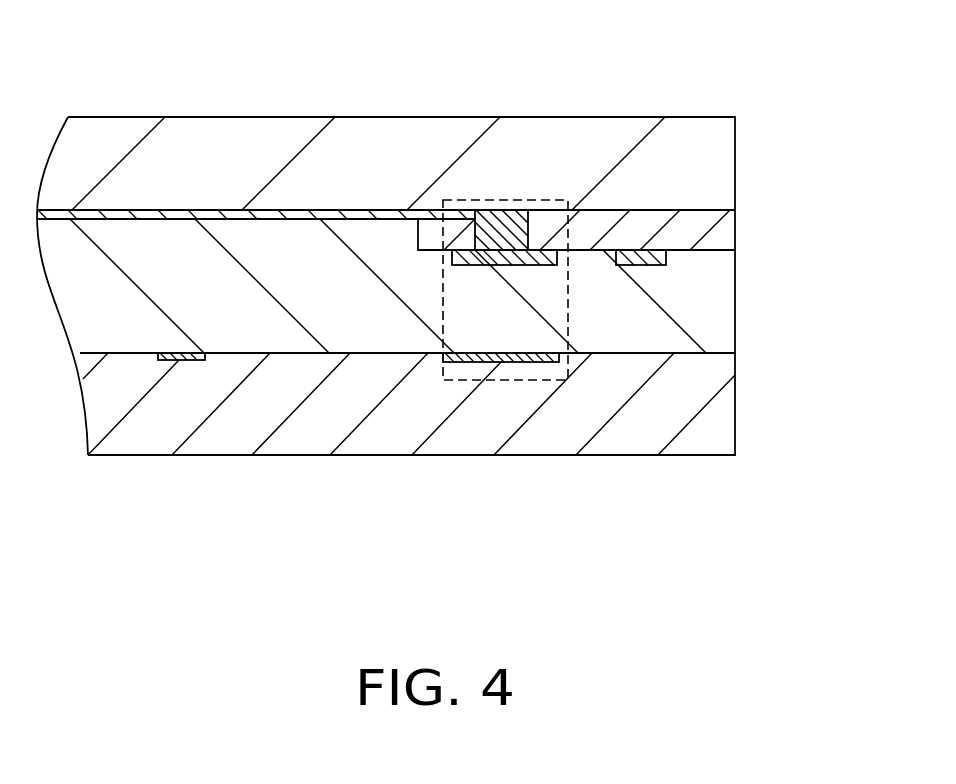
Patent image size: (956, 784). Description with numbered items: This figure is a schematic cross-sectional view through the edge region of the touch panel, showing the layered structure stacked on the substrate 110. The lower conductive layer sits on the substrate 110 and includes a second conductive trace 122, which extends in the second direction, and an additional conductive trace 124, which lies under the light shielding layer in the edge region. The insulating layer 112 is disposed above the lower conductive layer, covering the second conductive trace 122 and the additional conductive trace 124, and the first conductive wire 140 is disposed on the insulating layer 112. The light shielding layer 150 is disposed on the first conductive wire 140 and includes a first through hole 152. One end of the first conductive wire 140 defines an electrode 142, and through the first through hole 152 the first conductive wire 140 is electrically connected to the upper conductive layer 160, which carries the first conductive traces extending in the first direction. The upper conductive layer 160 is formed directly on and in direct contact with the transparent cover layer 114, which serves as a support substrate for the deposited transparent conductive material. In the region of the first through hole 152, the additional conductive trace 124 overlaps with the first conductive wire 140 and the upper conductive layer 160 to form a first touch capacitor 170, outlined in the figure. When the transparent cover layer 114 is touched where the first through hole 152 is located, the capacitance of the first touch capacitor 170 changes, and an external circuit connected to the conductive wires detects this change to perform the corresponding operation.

The substrate 110 is at (715, 428).
The insulating layer 112 is at (715, 317).
The transparent cover layer 114 is at (708, 143).
The second conductive trace 122 is at (172, 360).
The additional conductive trace 124 is at (537, 362).
The first conductive wire 140 is at (652, 256).
The electrode 142 is at (537, 257).
The light shielding layer 150 is at (720, 235).
The first through hole 152 is at (457, 216).
The upper conductive layer 160 is at (292, 212).
The first touch capacitor 170 is at (463, 380).